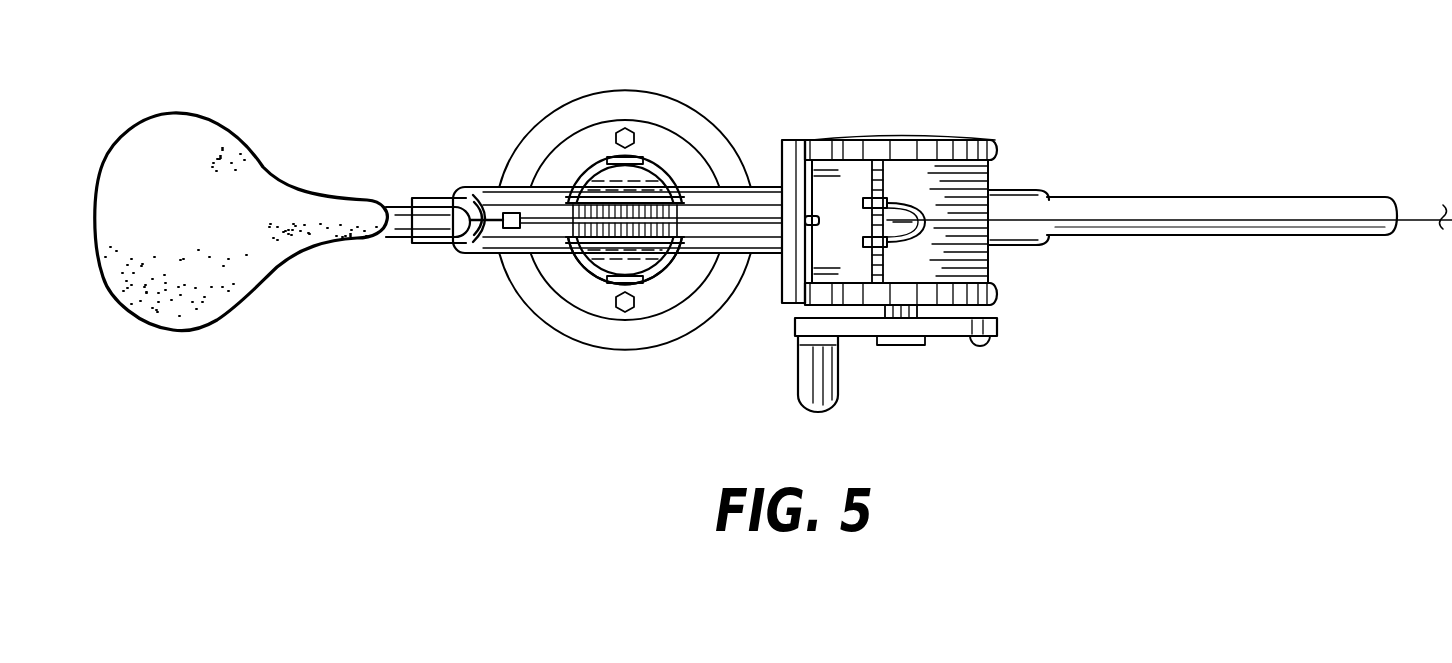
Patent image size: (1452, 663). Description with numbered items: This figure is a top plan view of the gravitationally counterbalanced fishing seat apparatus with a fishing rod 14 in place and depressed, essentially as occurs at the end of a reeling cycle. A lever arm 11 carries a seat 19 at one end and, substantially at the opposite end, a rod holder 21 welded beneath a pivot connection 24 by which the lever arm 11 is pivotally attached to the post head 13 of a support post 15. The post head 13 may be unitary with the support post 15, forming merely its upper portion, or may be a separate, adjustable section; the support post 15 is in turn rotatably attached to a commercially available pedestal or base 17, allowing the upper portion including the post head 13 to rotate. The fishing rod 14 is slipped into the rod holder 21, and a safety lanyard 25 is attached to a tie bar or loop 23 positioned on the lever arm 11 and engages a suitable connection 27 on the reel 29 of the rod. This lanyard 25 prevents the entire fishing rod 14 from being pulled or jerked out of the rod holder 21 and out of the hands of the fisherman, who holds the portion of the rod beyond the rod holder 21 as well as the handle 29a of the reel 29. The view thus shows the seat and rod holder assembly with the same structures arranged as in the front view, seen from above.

The seat 19 is at (215, 152).
The lever arm 11 is at (398, 213).
The tie bar or loop 23 is at (438, 243).
The safety lanyard 25 is at (537, 183).
The rod holder 21 is at (758, 253).
The pedestal or base 17 is at (655, 132).
The post head 13 is at (613, 247).
The support post 15 is at (663, 275).
The pivot connection 24 is at (617, 157).
The connection on the reel 27 is at (791, 145).
The reel 29 is at (925, 142).
The reel handle 29a is at (837, 385).
The fishing rod 14 is at (1193, 202).